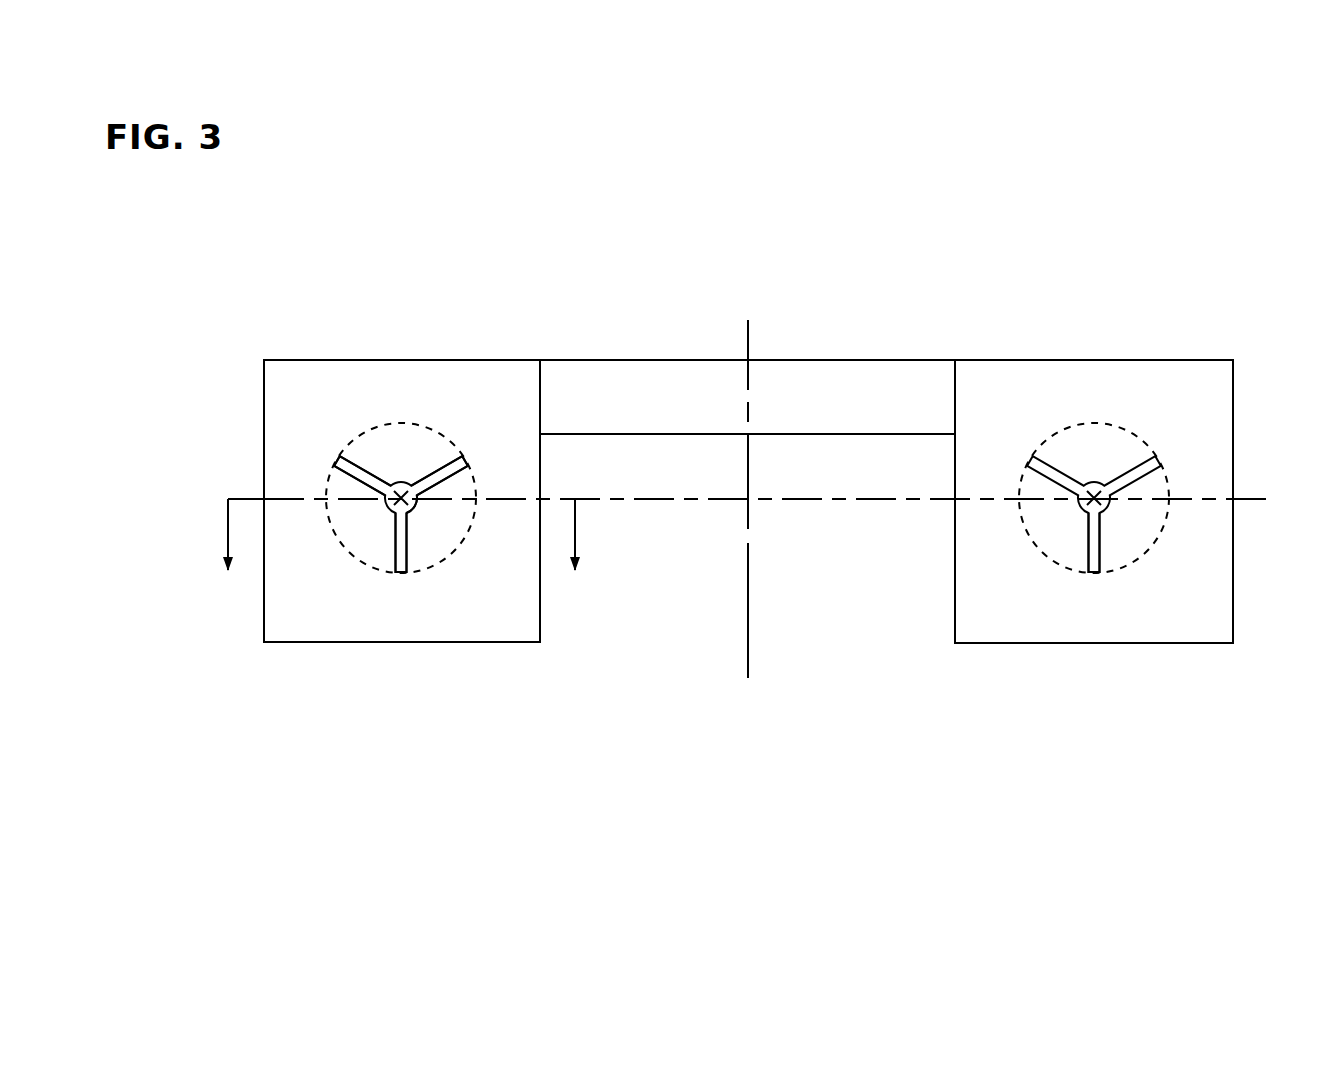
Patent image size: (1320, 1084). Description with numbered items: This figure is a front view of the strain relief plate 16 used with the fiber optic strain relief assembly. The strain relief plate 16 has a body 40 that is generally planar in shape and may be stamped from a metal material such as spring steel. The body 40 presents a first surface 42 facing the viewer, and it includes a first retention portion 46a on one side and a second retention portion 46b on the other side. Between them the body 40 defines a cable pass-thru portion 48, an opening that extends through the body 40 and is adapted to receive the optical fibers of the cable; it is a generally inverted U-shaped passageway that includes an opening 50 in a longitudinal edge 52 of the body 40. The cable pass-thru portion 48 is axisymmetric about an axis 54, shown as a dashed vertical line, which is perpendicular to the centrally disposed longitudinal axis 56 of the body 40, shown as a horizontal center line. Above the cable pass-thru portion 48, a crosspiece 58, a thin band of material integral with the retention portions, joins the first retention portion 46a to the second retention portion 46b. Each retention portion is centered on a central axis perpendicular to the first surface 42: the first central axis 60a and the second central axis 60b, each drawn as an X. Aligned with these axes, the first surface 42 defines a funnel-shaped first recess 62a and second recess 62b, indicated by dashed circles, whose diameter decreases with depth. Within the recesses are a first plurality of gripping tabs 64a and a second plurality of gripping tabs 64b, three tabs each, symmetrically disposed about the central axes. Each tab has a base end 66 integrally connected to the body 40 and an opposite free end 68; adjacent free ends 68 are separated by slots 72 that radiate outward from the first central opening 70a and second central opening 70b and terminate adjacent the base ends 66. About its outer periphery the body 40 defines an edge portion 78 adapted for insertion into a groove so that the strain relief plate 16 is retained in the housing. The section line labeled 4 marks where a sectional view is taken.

The strain relief plate 16 is at (312, 335).
The body 40 is at (262, 380).
The first surface 42 is at (678, 404).
The first retention portion 46a is at (333, 618).
The second retention portion 46b is at (1157, 622).
The cable pass-thru portion 48 is at (808, 635).
The opening 50 is at (540, 635).
The longitudinal edge 52 is at (524, 645).
The axis 54 is at (750, 336).
The longitudinal axis 56 is at (875, 500).
The crosspiece 58 is at (866, 376).
The first central axis 60a is at (398, 500).
The second central axis 60b is at (1090, 500).
The first recess 62a is at (430, 425).
The second recess 62b is at (1122, 430).
The first plurality of gripping tabs 64a is at (426, 540).
The second plurality of gripping tabs 64b is at (1132, 532).
The base end 66 is at (455, 523).
The free end 68 is at (440, 512).
The first central opening 70a is at (402, 482).
The second central opening 70b is at (1093, 487).
The slots 72 is at (338, 470).
The edge portion 78 is at (276, 430).
The section line 4- 4 is at (401, 556).